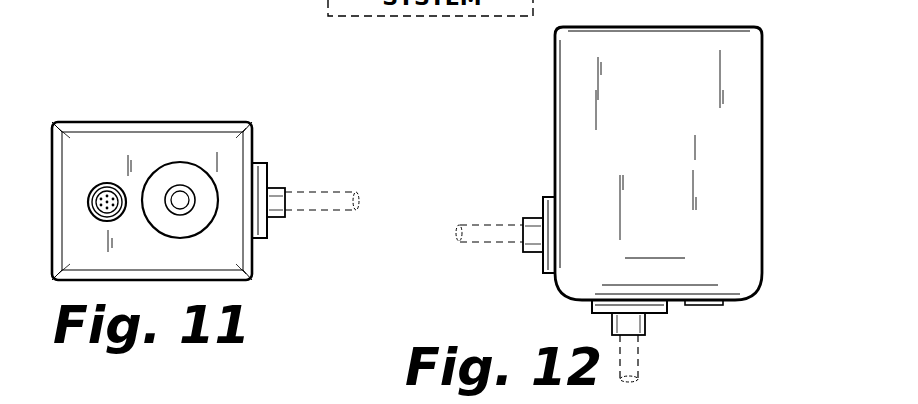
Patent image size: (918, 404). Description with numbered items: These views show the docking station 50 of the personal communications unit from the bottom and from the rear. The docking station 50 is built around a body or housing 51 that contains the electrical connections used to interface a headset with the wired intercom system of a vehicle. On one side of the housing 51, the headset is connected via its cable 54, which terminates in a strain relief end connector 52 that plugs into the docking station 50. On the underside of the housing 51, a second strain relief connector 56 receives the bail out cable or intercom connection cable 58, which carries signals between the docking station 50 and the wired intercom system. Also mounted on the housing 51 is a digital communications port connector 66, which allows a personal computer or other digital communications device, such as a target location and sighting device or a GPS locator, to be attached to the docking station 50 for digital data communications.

In FIG. 11, the docking station 50 is at (150, 181).
In FIG. 12, the docking station 50 is at (646, 163).
In FIG. 11, the housing 51 is at (189, 123).
In FIG. 12, the housing 51 is at (763, 157).
In FIG. 11, the strain relief end connector 52 is at (178, 163).
In FIG. 12, the strain relief end connector 52 is at (531, 252).
In FIG. 11, the cable 54 is at (338, 191).
In FIG. 12, the cable 54 is at (487, 223).
In FIG. 12, the strain relief connector 56 is at (651, 315).
In FIG. 12, the intercom connection cable 58 is at (641, 360).
In FIG. 11, the digital communications port connector 66 is at (100, 184).
In FIG. 12, the digital communications port connector 66 is at (712, 305).